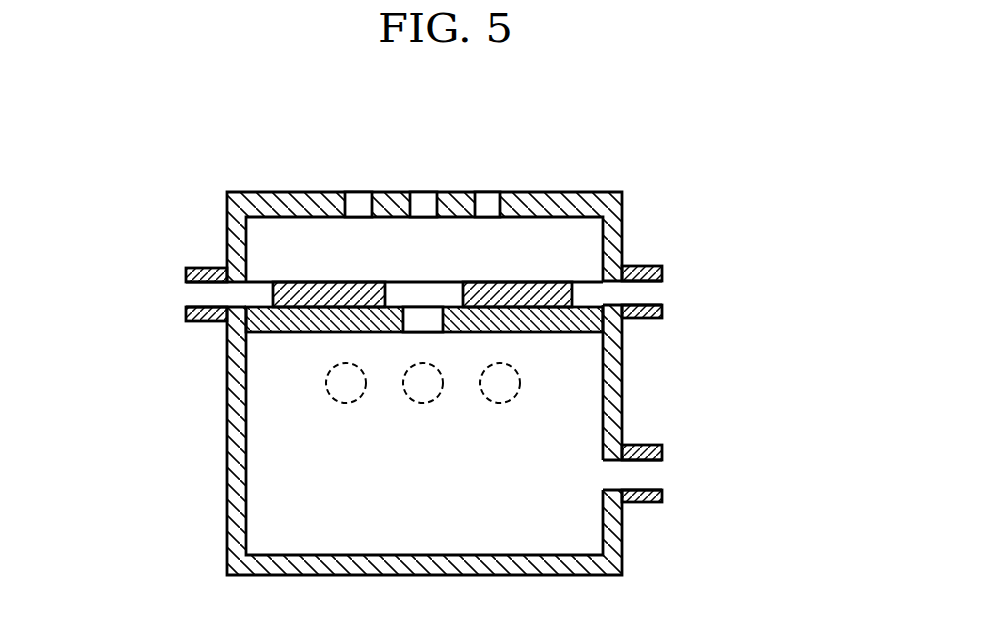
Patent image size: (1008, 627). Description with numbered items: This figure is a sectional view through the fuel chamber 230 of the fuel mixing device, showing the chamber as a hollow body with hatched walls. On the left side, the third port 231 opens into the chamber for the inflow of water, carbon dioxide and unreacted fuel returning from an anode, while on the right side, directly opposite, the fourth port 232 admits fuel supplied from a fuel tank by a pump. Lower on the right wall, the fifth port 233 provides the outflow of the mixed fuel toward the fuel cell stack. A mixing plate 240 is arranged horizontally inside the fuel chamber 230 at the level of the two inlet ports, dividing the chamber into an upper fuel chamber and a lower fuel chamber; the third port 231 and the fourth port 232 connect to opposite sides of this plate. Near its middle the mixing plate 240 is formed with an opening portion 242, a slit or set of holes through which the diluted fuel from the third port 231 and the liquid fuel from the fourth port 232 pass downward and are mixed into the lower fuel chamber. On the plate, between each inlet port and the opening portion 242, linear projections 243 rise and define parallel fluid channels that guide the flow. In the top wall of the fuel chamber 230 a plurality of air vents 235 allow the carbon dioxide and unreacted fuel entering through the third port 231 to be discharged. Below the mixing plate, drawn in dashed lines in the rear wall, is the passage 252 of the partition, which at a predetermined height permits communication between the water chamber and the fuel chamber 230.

The fuel chamber 230 is at (564, 353).
The third port 231 is at (198, 267).
The fourth port 232 is at (647, 320).
The fifth port 233 is at (657, 505).
The air vents 235 is at (357, 198).
The mixing plate 240 is at (438, 228).
The opening portion 242 is at (432, 320).
The linear projections 243 is at (307, 292).
The passage 252 is at (326, 384).